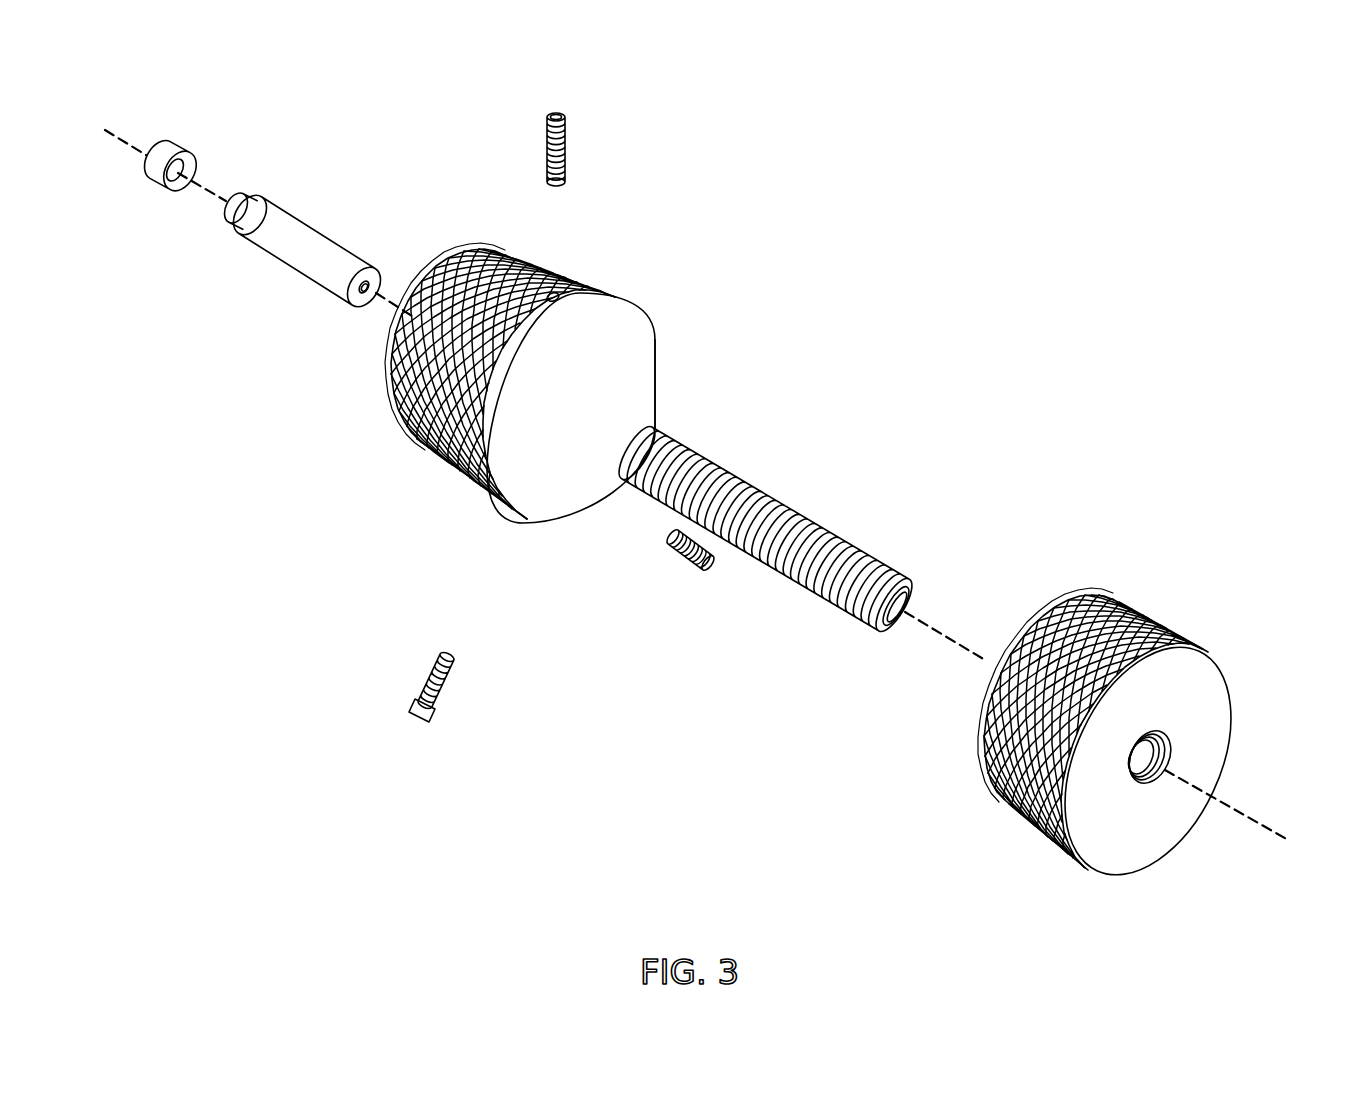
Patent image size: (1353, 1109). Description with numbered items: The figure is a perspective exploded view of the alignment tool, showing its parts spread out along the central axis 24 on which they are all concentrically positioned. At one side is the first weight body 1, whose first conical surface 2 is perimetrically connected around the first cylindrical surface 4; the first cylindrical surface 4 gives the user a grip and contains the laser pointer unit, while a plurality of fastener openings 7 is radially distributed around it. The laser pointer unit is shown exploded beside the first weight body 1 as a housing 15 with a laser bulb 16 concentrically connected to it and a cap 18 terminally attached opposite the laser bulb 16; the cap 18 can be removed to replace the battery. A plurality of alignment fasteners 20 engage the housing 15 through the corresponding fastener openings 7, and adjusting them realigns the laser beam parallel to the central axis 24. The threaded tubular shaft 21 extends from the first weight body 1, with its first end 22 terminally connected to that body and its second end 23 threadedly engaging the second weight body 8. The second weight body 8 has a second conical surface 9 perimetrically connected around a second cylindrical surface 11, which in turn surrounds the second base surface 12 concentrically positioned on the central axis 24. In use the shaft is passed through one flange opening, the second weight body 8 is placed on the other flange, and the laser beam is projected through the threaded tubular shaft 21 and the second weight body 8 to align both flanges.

The first weight body 1 is at (522, 370).
The first conical surface 2 is at (622, 357).
The first cylindrical surface 4 is at (585, 277).
The plurality of fastener openings 7 is at (548, 306).
The second weight body 8 is at (1102, 734).
The second conical surface 9 is at (1010, 643).
The second cylindrical surface 11 is at (1165, 625).
The second base surface 12 is at (1193, 705).
The housing 15 is at (334, 225).
The laser bulb 16 is at (368, 290).
The cap 18 is at (168, 150).
The plurality of alignment fasteners 20 is at (563, 130).
The threaded tubular shaft 21 is at (745, 546).
The first end 22 is at (618, 468).
The second end 23 is at (878, 633).
The central axis 24 is at (1262, 826).